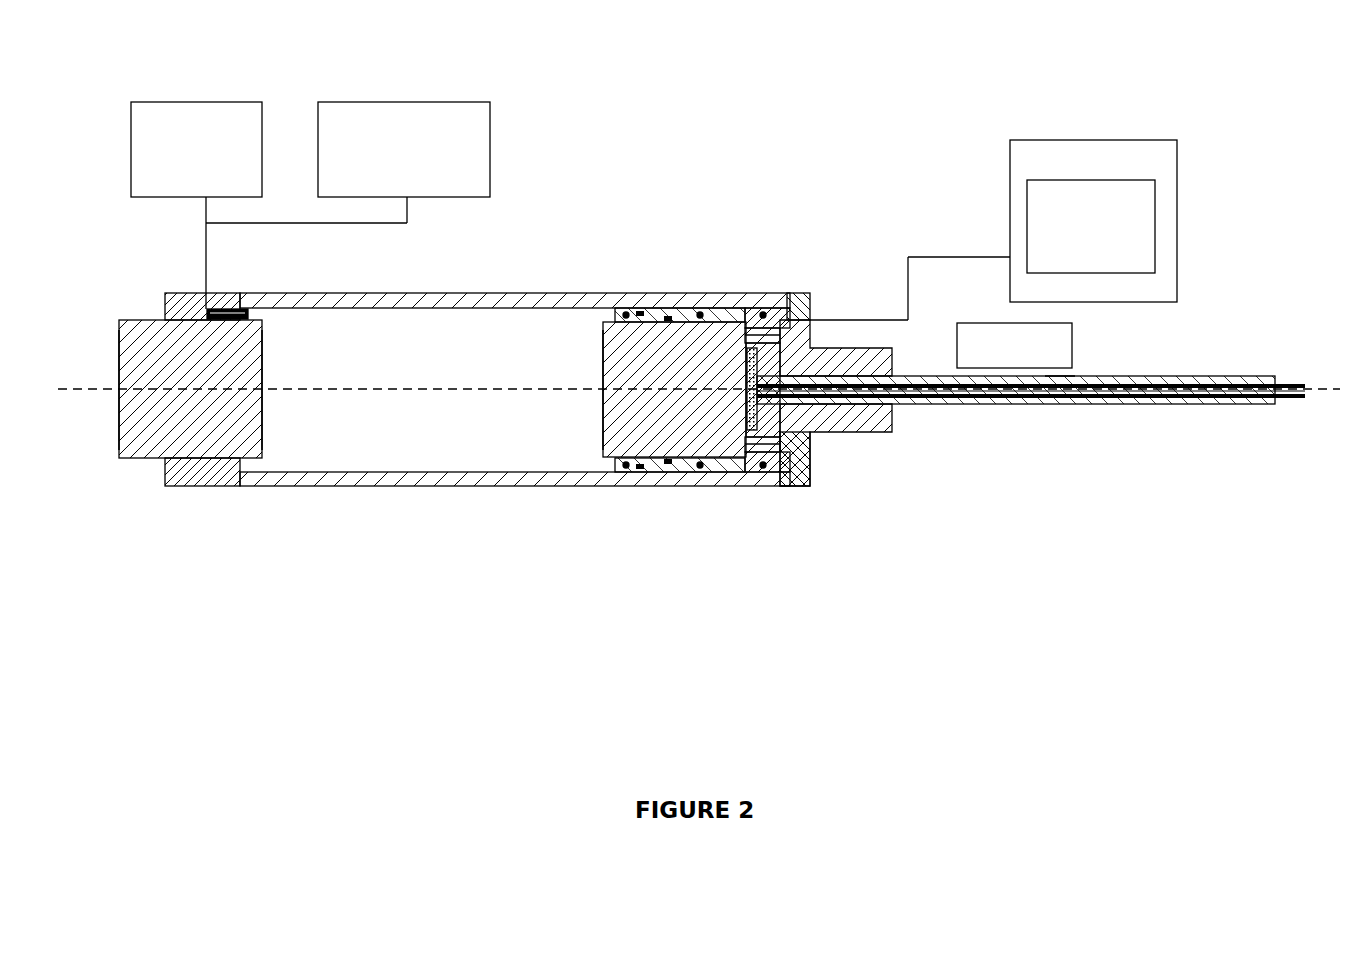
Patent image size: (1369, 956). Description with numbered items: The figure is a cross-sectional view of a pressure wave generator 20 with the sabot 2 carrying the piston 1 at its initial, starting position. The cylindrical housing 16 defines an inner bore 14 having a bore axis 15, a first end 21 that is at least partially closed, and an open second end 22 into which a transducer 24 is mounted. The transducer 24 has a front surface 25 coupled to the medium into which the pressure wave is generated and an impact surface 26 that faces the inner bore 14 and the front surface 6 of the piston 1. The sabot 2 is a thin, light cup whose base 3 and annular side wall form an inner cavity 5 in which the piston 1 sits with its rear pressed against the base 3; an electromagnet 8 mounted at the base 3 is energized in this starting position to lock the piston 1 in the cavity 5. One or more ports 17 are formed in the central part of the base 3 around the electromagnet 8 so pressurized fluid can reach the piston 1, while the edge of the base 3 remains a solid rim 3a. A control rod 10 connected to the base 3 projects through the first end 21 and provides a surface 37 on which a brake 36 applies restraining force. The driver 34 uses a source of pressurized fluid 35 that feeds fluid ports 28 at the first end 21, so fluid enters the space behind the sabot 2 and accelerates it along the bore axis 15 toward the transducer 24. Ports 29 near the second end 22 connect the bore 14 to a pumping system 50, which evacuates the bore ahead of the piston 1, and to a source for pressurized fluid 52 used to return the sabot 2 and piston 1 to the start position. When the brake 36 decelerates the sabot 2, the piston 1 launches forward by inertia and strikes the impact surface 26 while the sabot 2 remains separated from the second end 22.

The piston 1 is at (628, 364).
The sabot 2 is at (681, 468).
The base 3 is at (772, 421).
The solid rim 3a is at (782, 467).
The inner cavity 5 is at (720, 470).
The front surface 6 is at (602, 426).
The electromagnet 8 is at (758, 362).
The control rod 10 is at (1087, 408).
The inner bore 14 is at (417, 376).
The bore axis 15 is at (469, 391).
The housing 16 is at (496, 298).
The ports 17 is at (782, 339).
The pressure wave generator 20 is at (998, 116).
The first end 21 is at (896, 356).
The second end 22 is at (178, 306).
The transducer 24 is at (204, 367).
The front surface 25 is at (117, 349).
The impact surface 26 is at (265, 394).
The fluid ports 28 is at (803, 317).
The ports 29 is at (224, 306).
The driver 34 is at (1102, 171).
The source of pressurized fluid 35 is at (1125, 260).
The brake 36 is at (1044, 354).
The surface 37 is at (1062, 375).
The pumping system 50 is at (168, 181).
The source for pressurized fluid 52 is at (354, 183).